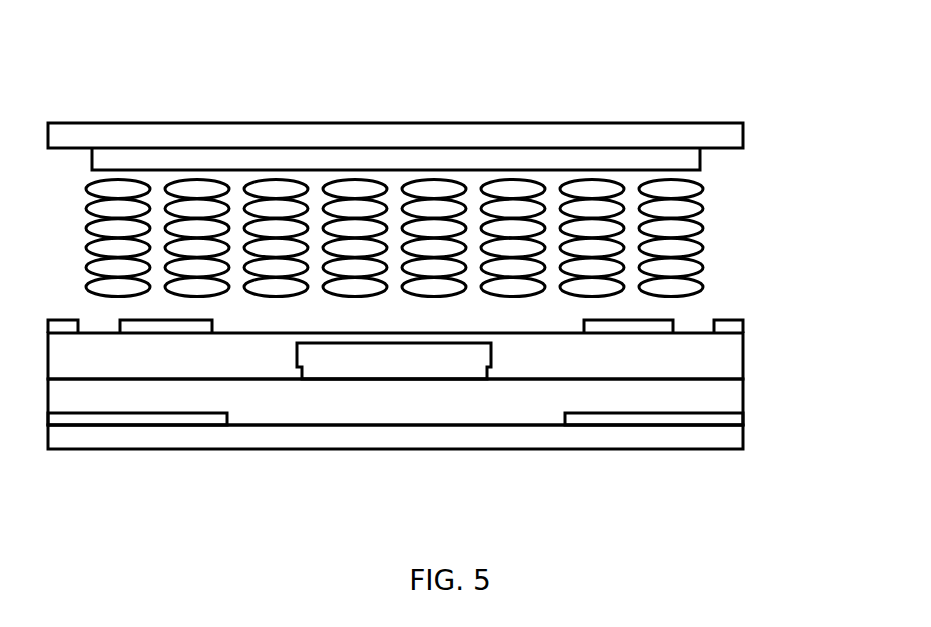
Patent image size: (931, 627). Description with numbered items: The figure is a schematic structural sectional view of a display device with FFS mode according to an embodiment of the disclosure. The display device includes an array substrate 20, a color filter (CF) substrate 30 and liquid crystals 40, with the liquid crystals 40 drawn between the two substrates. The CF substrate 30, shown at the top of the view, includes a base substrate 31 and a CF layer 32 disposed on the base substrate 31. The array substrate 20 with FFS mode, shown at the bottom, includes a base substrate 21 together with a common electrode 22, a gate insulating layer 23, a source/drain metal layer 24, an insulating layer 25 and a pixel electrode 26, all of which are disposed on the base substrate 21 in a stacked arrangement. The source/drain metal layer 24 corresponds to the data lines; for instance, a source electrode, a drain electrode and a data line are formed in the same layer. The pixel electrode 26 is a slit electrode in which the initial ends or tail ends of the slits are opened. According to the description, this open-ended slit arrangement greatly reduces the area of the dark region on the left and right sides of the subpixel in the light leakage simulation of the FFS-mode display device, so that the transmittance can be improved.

The array substrate 20 is at (437, 432).
The base substrate 21 is at (704, 436).
The common electrode 22 is at (78, 422).
The gate insulating layer 23 is at (546, 408).
The source/drain metal layer 24 is at (403, 358).
The insulating layer 25 is at (245, 365).
The pixel electrode 26 is at (164, 327).
The color filter substrate 30 is at (440, 114).
The base substrate 31 is at (352, 135).
The CF layer 32 is at (322, 158).
The liquid crystal 40 is at (735, 239).